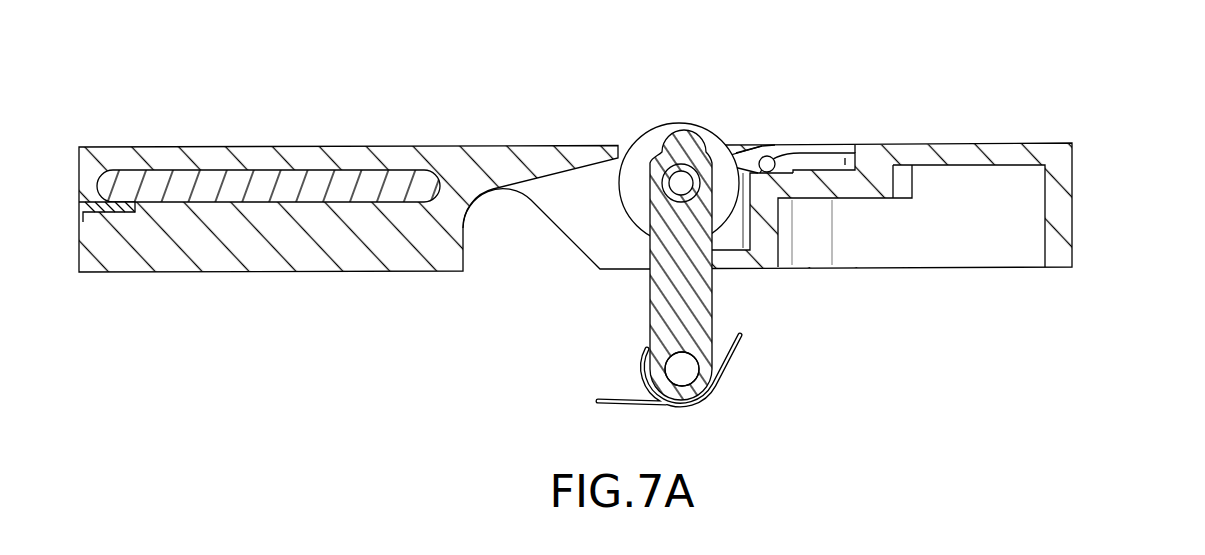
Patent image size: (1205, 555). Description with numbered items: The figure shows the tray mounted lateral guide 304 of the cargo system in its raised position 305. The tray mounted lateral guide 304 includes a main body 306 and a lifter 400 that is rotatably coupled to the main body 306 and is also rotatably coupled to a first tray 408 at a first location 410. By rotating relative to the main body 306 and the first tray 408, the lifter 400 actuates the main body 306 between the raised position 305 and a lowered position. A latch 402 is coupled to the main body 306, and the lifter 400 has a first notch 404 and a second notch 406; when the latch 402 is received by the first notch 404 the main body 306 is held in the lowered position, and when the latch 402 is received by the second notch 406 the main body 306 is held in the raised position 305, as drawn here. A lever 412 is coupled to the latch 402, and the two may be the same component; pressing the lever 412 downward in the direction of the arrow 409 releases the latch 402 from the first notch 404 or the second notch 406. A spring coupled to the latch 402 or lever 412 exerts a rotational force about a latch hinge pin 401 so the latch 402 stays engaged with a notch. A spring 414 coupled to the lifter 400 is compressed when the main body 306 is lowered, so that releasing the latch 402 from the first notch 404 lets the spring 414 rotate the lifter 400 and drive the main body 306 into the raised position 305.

The tray mounted lateral guide 304 is at (1100, 86).
The raised position 305 is at (1177, 86).
The main body 306 is at (462, 165).
The lifter 400 is at (703, 298).
The latch hinge pin 401 is at (770, 171).
The latch 402 is at (745, 143).
The first notch 404 is at (664, 146).
The second notch 406 is at (705, 143).
The first tray 408 is at (690, 368).
The arrow 409 is at (817, 125).
The first location 410 is at (680, 377).
The lever 412 is at (840, 148).
The spring 414 is at (648, 405).